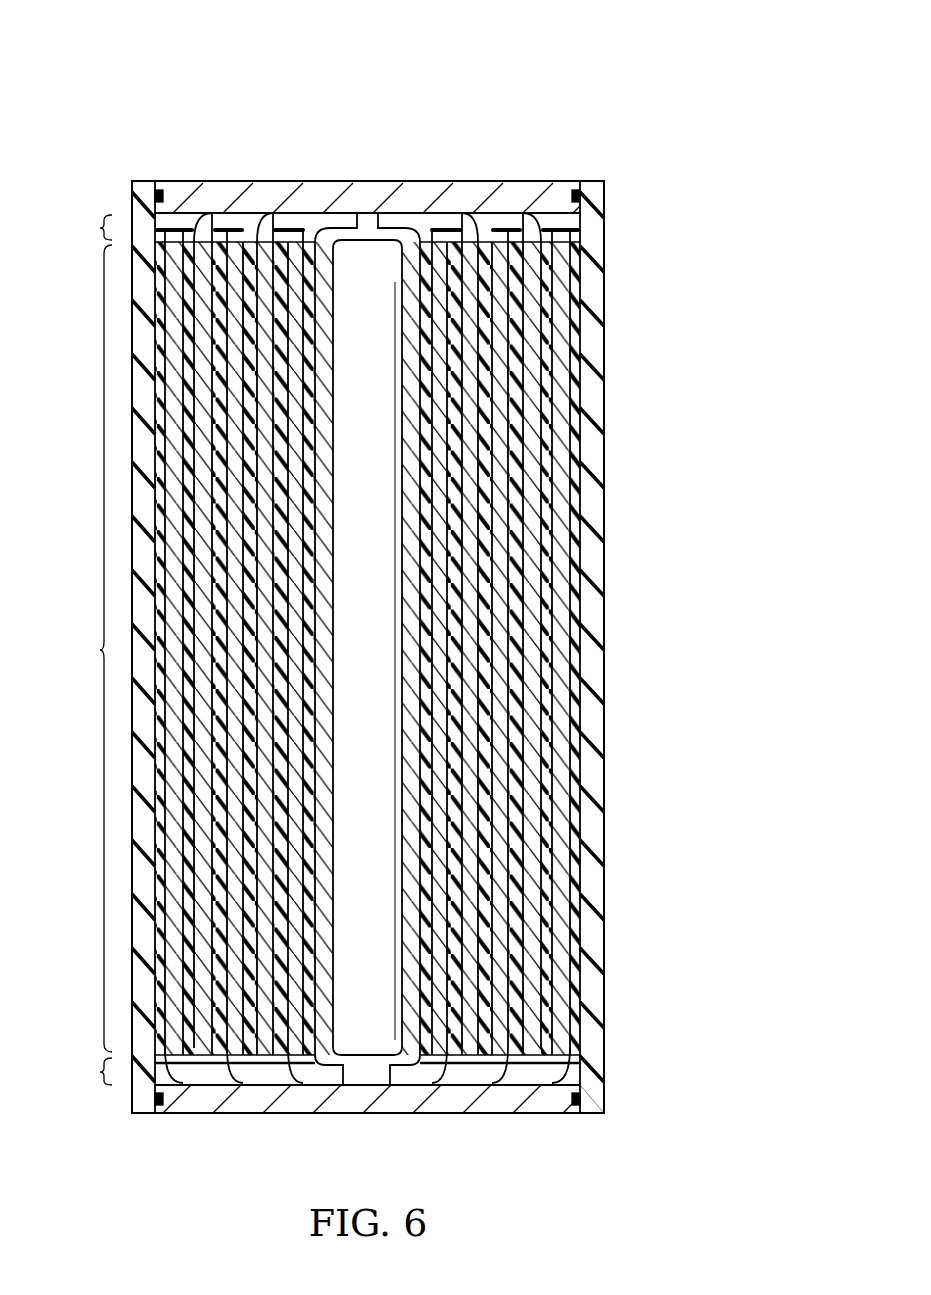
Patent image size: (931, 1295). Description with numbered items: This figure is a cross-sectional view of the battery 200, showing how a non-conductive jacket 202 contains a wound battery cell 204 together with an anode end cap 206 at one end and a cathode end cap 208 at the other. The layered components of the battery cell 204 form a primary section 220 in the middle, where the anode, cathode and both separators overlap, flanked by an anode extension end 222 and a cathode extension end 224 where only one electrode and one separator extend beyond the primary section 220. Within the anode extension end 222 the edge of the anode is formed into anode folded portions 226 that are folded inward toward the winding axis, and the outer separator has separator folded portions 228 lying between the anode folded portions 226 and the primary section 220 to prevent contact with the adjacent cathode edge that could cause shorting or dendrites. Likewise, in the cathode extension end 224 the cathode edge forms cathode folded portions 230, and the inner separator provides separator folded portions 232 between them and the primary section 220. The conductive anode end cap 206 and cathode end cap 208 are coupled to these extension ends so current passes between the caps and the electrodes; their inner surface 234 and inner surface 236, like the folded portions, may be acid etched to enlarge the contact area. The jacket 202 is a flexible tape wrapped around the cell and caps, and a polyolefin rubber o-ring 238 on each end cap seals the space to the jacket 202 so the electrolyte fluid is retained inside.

The battery 200 is at (210, 81).
The jacket 202 is at (598, 628).
The battery cell 204 is at (672, 302).
The anode end cap 206 is at (371, 195).
The cathode end cap 208 is at (443, 1104).
The primary section 220 is at (76, 648).
The anode extension end 222 is at (76, 226).
The cathode extension end 224 is at (76, 1072).
The anode folded portions 226 is at (240, 224).
The separator folded portions 228 is at (440, 224).
The cathode folded portions 230 is at (268, 1086).
The separator folded portions 232 is at (470, 1086).
The inner surface 234 is at (602, 212).
The inner surface 236 is at (600, 1068).
The o-ring 238 is at (170, 195).